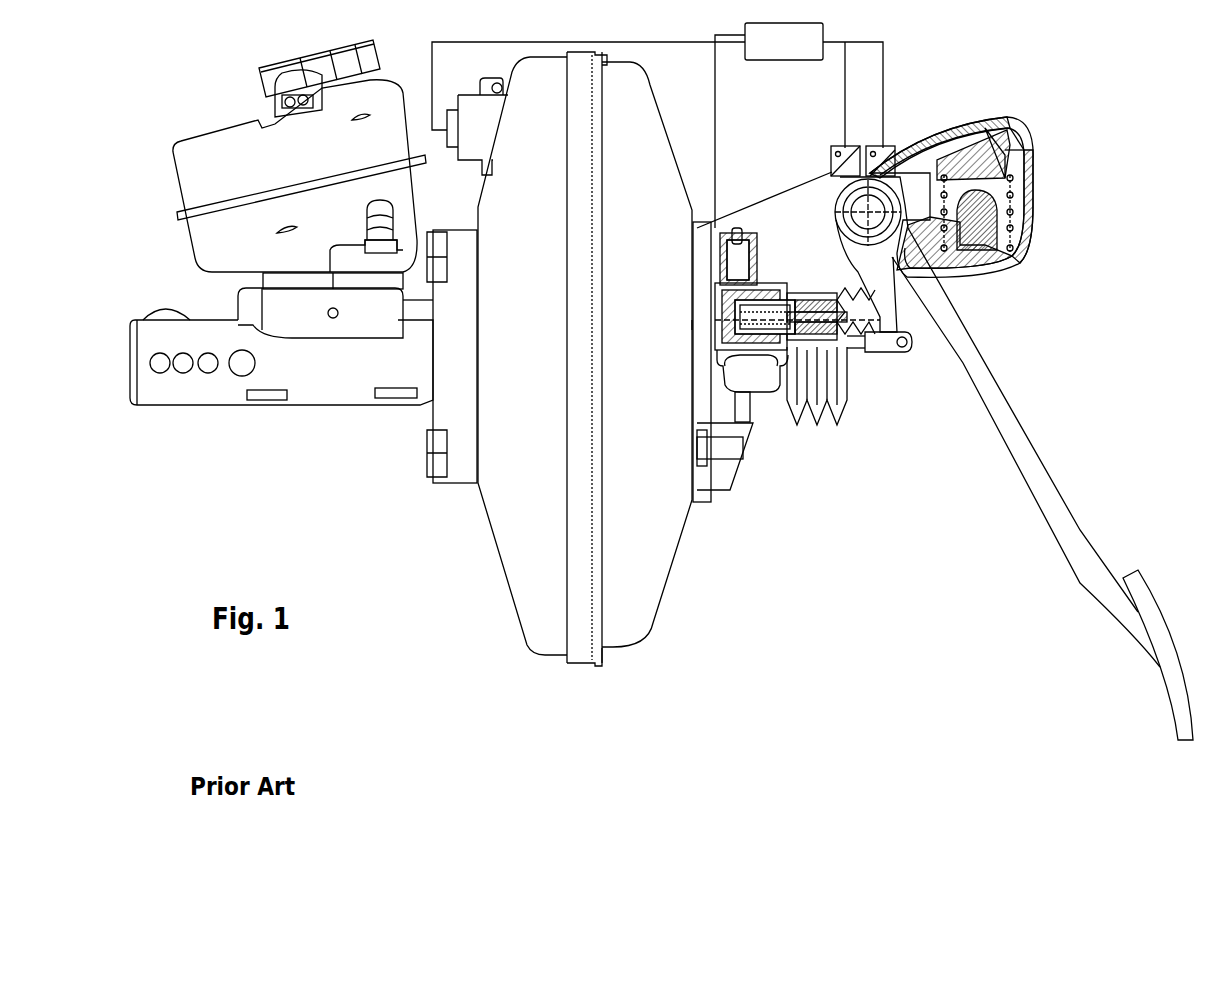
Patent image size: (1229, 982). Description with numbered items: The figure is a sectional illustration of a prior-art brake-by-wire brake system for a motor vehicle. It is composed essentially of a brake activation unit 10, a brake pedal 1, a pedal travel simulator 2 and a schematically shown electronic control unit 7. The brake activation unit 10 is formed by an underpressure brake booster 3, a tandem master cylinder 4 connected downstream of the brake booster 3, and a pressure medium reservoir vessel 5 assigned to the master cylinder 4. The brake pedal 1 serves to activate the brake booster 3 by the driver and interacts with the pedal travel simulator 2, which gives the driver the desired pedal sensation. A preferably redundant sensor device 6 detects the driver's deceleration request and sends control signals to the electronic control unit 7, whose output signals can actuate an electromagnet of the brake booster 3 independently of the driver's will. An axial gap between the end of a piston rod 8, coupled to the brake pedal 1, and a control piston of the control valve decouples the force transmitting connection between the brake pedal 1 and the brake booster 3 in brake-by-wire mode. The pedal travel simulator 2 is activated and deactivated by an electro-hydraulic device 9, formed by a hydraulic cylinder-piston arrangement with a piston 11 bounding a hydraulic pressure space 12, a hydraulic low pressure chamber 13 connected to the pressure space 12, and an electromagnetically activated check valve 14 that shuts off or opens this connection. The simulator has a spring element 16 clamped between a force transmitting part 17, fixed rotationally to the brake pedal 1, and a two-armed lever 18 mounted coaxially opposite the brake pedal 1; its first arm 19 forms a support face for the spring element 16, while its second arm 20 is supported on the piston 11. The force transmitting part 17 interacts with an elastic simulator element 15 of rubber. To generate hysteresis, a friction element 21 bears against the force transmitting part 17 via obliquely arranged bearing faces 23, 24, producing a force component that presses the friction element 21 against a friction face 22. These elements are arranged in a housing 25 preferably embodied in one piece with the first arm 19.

The brake pedal 1 is at (995, 430).
The pedal travel simulator 2 is at (947, 118).
The underpressure brake booster 3 is at (500, 492).
The tandem master cylinder 4 is at (172, 395).
The pressure medium reservoir vessel 5 is at (213, 140).
The sensor device 6 is at (882, 146).
The electronic control unit 7 is at (784, 60).
The piston rod 8 is at (857, 352).
The electro-hydraulic device 9 is at (795, 282).
The brake activation unit 10 is at (682, 566).
The piston 11 is at (822, 305).
The hydraulic pressure space 12 is at (760, 312).
The hydraulic low pressure chamber 13 is at (760, 365).
The check valve 14 is at (748, 240).
The elastic simulator element 15 is at (975, 230).
The spring element 16 is at (1015, 228).
The force transmitting part 17 is at (980, 135).
The two-armed lever 18 is at (1035, 265).
The first arm 19 is at (1007, 258).
The second arm 20 is at (887, 290).
The friction element 21 is at (1000, 150).
The friction face 22 is at (1030, 185).
The bearing face 23 is at (968, 162).
The bearing face 24 is at (1010, 152).
The housing 25 is at (1025, 142).